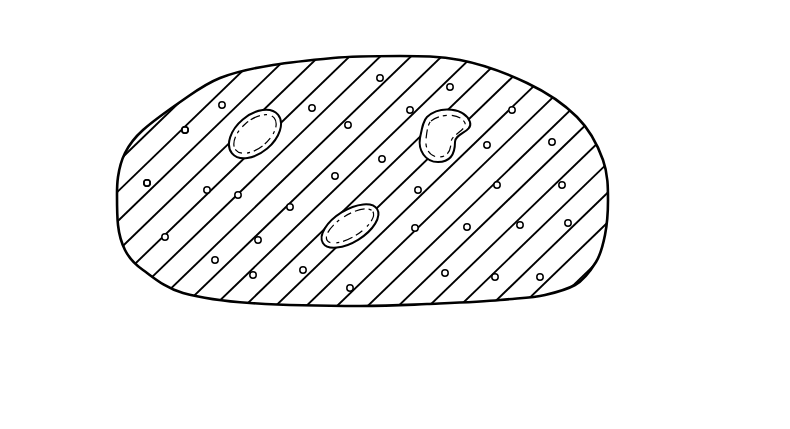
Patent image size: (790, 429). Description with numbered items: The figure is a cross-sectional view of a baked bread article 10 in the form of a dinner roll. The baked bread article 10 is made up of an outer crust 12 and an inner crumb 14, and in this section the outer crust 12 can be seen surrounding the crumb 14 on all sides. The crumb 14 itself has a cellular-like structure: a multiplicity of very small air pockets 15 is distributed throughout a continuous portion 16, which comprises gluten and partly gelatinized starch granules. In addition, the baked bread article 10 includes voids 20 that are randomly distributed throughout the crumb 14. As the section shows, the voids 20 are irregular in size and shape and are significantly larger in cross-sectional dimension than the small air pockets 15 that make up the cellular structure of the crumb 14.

The baked bread article 10 is at (602, 63).
The outer crust 12 is at (608, 205).
The crumb 14 is at (119, 247).
The air pockets 15 is at (180, 132).
The continuous portion 16 is at (510, 267).
The voids 20 is at (255, 133).